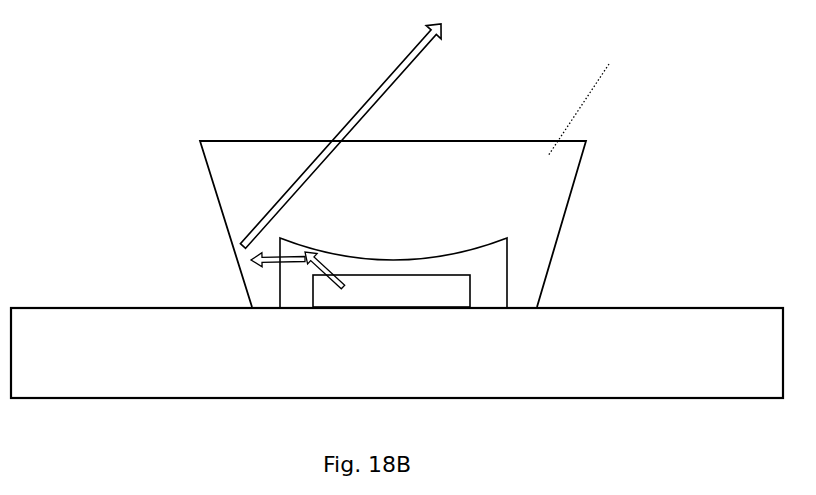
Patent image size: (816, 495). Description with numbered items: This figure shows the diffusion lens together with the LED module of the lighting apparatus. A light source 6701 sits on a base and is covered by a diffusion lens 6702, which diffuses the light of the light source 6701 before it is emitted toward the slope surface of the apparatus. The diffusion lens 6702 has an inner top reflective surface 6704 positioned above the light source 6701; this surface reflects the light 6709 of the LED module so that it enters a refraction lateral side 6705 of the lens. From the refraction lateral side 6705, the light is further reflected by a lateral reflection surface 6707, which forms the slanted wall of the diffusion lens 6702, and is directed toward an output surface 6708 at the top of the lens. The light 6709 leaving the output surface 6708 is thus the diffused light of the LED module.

The light source 6701 is at (433, 295).
The diffusion lens 6702 is at (621, 91).
The inner top reflective surface 6704 is at (411, 260).
The refraction lateral side 6705 is at (280, 288).
The lateral reflection surface 6707 is at (225, 205).
The output surface 6708 is at (447, 143).
The light 6709 is at (365, 105).